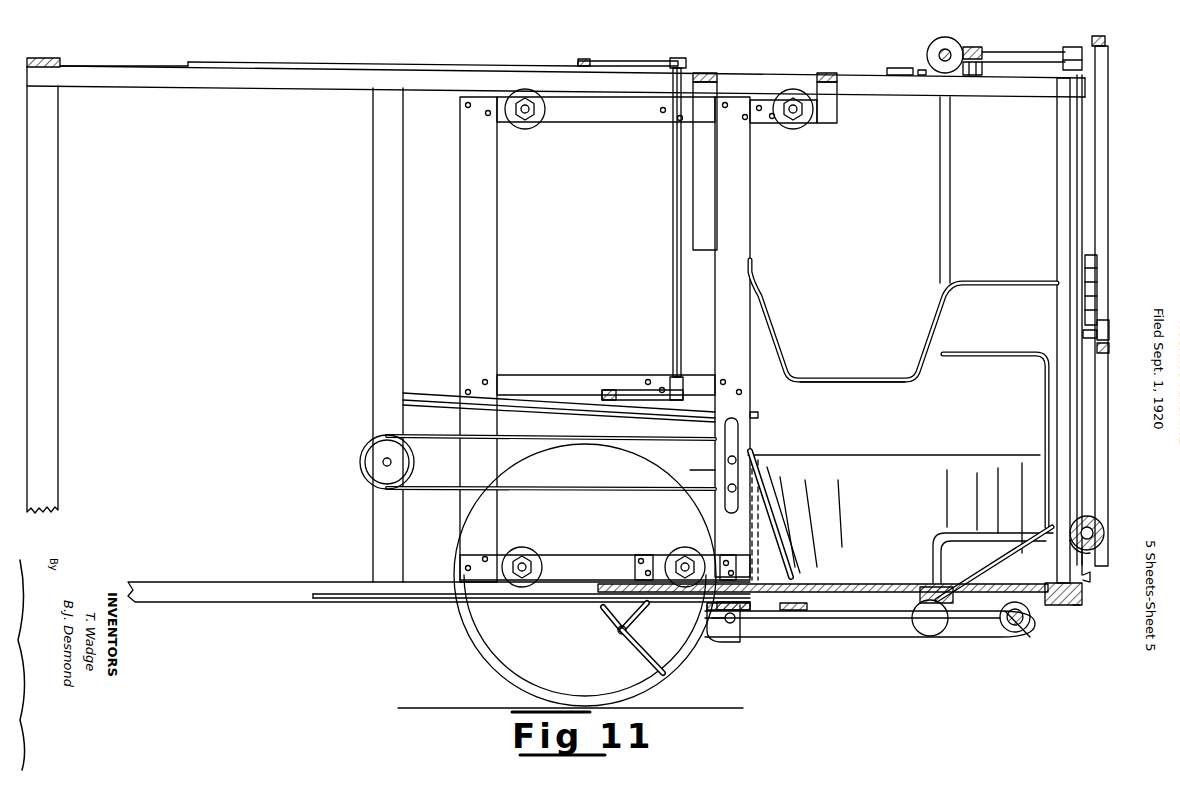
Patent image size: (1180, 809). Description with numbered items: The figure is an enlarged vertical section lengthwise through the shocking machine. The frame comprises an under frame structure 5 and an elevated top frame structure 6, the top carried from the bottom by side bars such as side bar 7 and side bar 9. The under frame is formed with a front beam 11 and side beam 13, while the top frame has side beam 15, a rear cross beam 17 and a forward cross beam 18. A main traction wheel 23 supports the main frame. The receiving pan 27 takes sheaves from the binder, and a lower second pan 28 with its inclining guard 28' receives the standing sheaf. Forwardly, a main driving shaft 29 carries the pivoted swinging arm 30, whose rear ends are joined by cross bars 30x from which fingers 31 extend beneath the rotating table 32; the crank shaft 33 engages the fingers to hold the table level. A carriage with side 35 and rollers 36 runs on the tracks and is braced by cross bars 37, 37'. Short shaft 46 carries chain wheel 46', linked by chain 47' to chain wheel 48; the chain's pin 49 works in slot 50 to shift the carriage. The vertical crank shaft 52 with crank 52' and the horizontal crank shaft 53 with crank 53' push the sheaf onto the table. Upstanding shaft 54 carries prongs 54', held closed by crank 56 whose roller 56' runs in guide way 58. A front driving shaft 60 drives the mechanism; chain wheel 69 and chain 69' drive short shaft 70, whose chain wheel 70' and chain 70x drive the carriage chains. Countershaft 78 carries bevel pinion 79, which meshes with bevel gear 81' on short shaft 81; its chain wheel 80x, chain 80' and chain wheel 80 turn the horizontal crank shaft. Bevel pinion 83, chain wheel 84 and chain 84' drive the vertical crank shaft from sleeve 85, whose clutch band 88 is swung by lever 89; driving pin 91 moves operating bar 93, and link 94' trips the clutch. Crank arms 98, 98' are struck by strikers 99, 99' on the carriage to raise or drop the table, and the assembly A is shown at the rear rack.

The under frame structure 5 is at (282, 580).
The top frame structure 6 is at (308, 88).
The side bar 7 is at (1057, 205).
The side bar 9 is at (372, 228).
The front beam 11 is at (1073, 605).
The side beam 13 is at (193, 582).
The side beam 15 is at (162, 82).
The rear connecting cross beam 17 is at (60, 62).
The forwardly positioned cross beam 18 is at (890, 68).
The main traction wheel 23 is at (490, 660).
The receiving pan 27 is at (433, 392).
The second pan 28 is at (993, 558).
The inclining guard 28' is at (861, 500).
The main driving shaft 29 is at (1020, 628).
The swinging arm 30 is at (865, 618).
The cross bar 30x is at (705, 627).
The fingers 31 is at (415, 604).
The rotating table 32 is at (612, 582).
The crank shaft 33 is at (605, 620).
The carriage side 35 is at (483, 283).
The rollers 36 is at (533, 128).
The cross bar 37 is at (715, 145).
The cross bar 37' is at (793, 85).
The short shaft 46 is at (757, 445).
The chain wheel 46' is at (770, 419).
The chain 47' is at (551, 451).
The chain wheel 48 is at (404, 460).
The outstanding pin 49 is at (730, 490).
The slot 50 is at (724, 468).
The crank shaft 52 is at (964, 190).
The crank 52' is at (995, 440).
The crank shaft 53 is at (903, 318).
The crank 53' is at (852, 369).
The shaft 54 is at (660, 229).
The prongs 54' is at (642, 374).
The crank 56 is at (628, 50).
The roller 56' is at (570, 52).
The guide way 58 is at (404, 64).
The driving shaft 60 is at (1100, 524).
The chain wheel 69 is at (1004, 641).
The chain 69' is at (985, 638).
The short shaft 70 is at (394, 369).
The chain wheel 70' is at (723, 637).
The chain 70x is at (688, 471).
The countershaft 78 is at (940, 52).
The bevel pinion 79 is at (945, 37).
The chain wheel 80 is at (1113, 280).
The chain 80' is at (1118, 306).
The chain wheel 80x is at (1092, 38).
The short shaft 81 is at (1032, 52).
The bevel gear 81' is at (977, 45).
The bevel pinion 83 is at (955, 595).
The chain wheel 84 is at (921, 637).
The chain 84' is at (984, 508).
The sleeve 85 is at (1080, 518).
The band 88 is at (1098, 522).
The lever 89 is at (1080, 552).
The driving pin 91 is at (1110, 345).
The operating bar 93 is at (1108, 418).
The link 94' is at (1103, 587).
The crank arm 98 is at (646, 618).
The crank arm 98' is at (636, 651).
The striker 99 is at (747, 520).
The striker 99' is at (641, 548).
The assembly A is at (1097, 338).